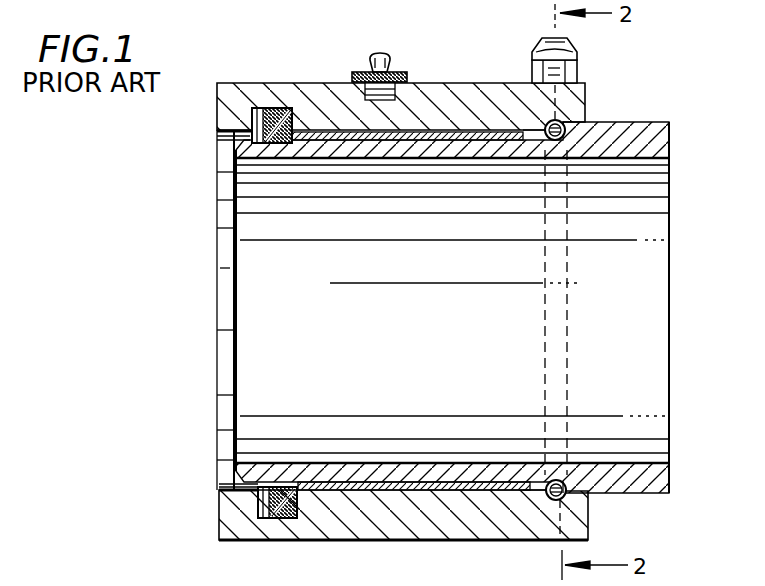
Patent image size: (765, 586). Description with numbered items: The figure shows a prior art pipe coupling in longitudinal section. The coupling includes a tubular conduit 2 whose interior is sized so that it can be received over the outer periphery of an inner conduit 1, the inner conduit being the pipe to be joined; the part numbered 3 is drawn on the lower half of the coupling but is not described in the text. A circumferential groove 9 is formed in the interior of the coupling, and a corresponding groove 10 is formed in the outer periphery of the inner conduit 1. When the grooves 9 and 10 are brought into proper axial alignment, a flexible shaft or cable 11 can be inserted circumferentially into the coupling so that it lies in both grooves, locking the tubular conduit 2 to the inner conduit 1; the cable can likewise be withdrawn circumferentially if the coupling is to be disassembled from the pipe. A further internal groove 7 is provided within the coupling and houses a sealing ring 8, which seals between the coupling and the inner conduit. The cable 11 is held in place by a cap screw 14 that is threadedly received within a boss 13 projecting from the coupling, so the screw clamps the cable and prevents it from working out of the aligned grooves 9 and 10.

The inner conduit 1 is at (670, 127).
The tubular conduit 2 is at (587, 106).
The lower coupling half 3 is at (587, 506).
The internal groove 7 is at (260, 510).
The sealing ring 8 is at (285, 522).
The circumferential groove 9 is at (548, 497).
The groove 10 is at (566, 482).
The flexible shaft or cable 11 is at (547, 482).
The boss 13 is at (577, 76).
The cap screw 14 is at (532, 58).